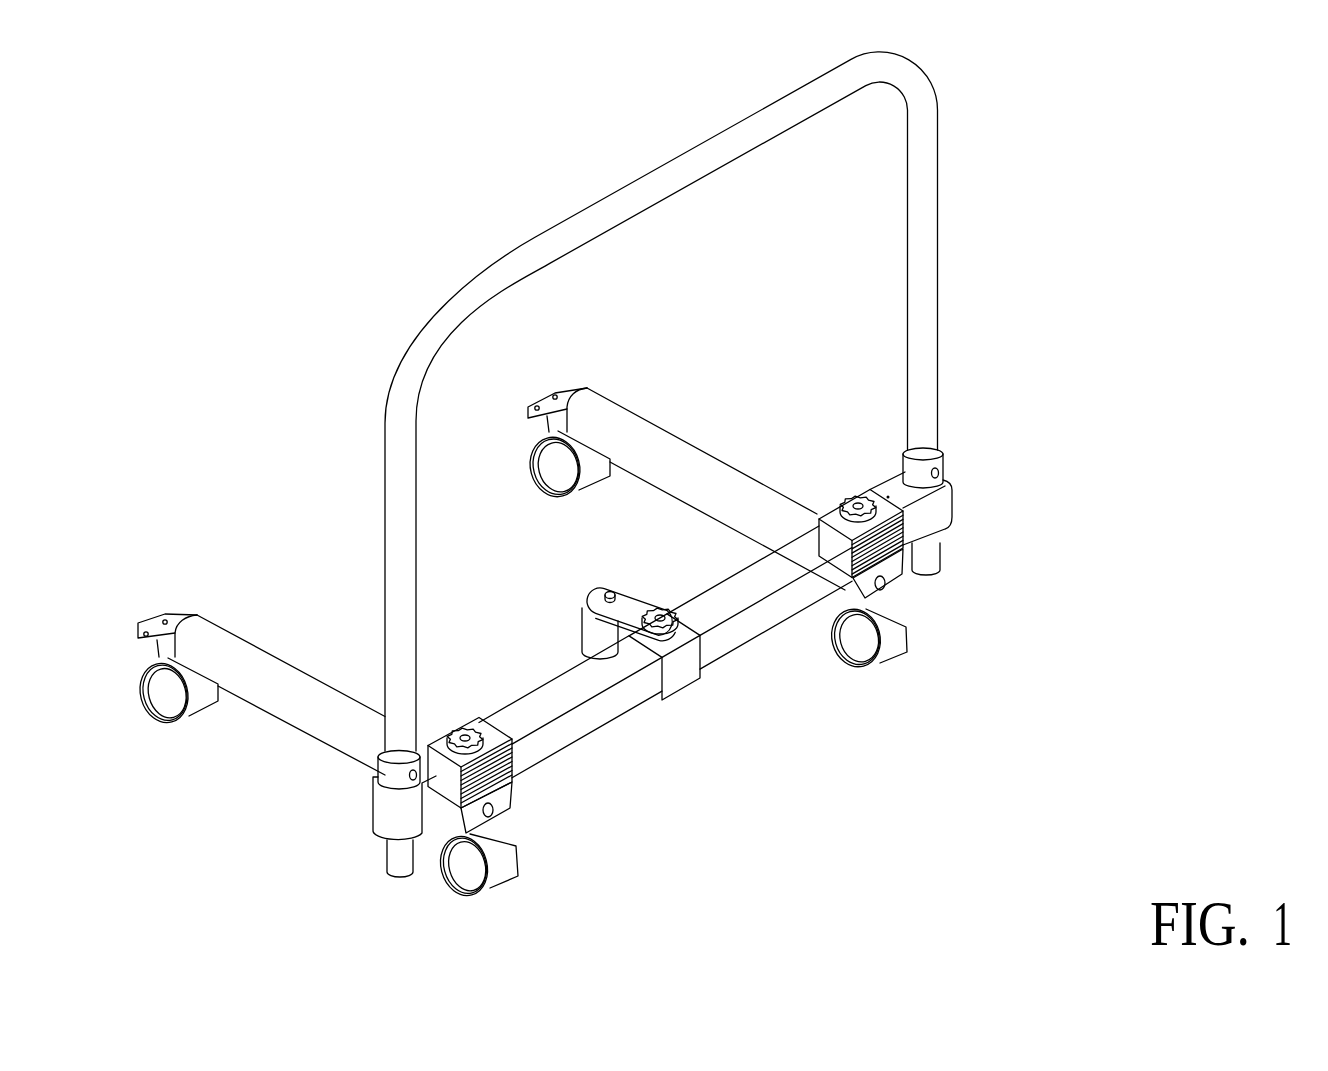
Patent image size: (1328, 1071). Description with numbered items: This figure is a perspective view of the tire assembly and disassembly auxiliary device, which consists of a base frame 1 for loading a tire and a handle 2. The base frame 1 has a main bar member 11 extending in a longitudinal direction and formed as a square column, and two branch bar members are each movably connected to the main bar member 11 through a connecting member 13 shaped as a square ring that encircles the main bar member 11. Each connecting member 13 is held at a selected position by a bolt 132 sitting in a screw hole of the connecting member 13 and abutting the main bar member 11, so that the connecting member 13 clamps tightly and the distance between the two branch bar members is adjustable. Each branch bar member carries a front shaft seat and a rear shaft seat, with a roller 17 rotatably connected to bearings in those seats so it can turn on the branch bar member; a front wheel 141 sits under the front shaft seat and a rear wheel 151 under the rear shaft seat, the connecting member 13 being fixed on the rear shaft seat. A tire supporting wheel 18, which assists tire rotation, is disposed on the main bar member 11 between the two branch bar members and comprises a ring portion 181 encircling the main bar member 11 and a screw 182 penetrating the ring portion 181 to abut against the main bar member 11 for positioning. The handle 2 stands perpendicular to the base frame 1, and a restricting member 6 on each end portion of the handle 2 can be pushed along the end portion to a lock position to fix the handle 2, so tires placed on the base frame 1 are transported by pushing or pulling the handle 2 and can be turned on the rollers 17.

The base frame 1 is at (567, 500).
The handle 2 is at (651, 183).
The restricting member 6 is at (385, 815).
The main bar member 11 is at (555, 735).
The connecting member 13 is at (493, 782).
The bolt 132 is at (466, 728).
The front wheel 141 is at (158, 705).
The rear wheel 151 is at (462, 872).
The roller 17 is at (288, 678).
The tire supporting wheel 18 is at (651, 635).
The ring portion 181 is at (685, 673).
The screw 182 is at (657, 605).